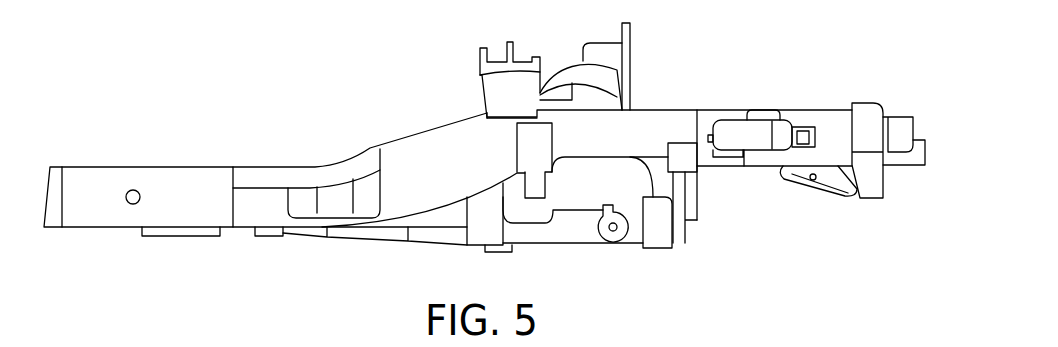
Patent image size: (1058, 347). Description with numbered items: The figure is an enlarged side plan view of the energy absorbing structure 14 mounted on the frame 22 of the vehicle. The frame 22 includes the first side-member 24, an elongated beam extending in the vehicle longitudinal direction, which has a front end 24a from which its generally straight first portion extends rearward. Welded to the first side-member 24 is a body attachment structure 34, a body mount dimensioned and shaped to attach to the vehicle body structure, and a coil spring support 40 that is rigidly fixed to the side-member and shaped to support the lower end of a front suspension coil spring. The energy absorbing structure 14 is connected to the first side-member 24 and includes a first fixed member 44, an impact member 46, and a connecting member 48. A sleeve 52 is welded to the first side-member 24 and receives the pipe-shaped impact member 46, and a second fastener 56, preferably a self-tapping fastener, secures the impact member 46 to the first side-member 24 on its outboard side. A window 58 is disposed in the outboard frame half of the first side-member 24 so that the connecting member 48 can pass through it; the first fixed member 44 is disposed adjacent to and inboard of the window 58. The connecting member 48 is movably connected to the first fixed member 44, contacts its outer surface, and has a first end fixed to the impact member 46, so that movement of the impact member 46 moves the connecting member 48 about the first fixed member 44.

The frame 22 is at (308, 82).
The first side-member 24 is at (176, 167).
The front end 24a is at (920, 123).
The coil spring support 40 is at (560, 62).
The energy absorbing structure 14 is at (758, 155).
The body attachment structure 34 is at (787, 122).
The first fixed member 44 is at (798, 147).
The impact member 46 is at (760, 132).
The connecting member 48 is at (818, 160).
The sleeve 52 is at (723, 120).
The second fastener 56 is at (708, 138).
The window 58 is at (817, 135).